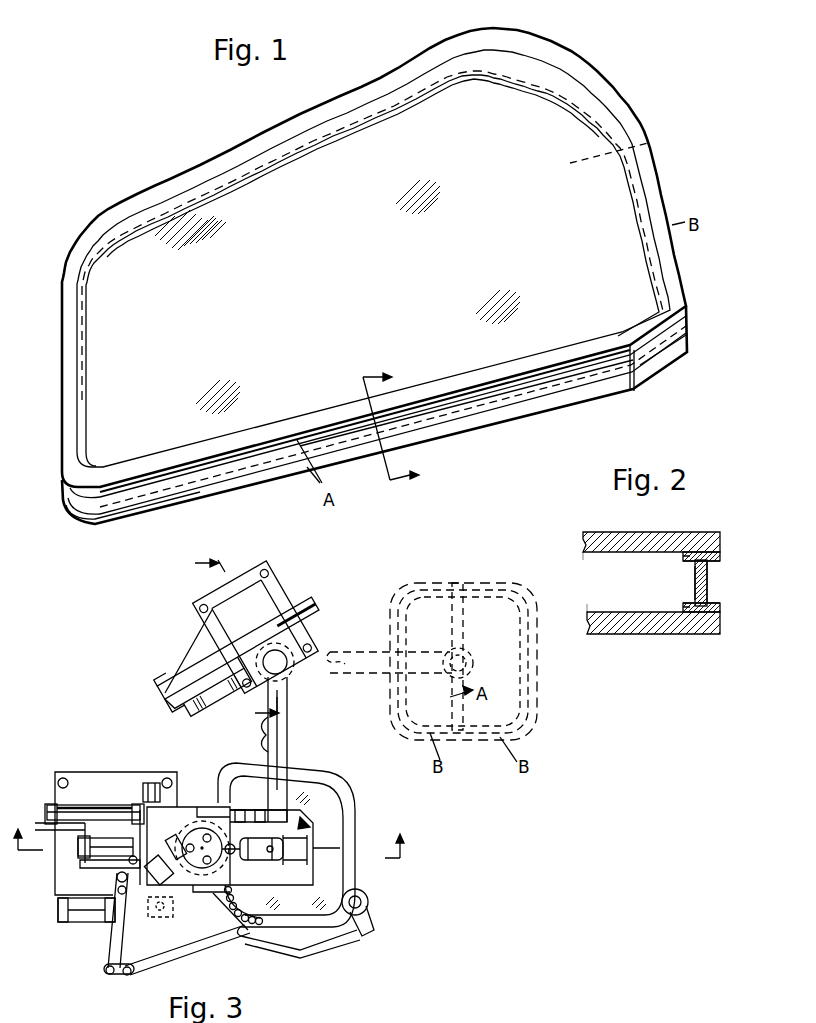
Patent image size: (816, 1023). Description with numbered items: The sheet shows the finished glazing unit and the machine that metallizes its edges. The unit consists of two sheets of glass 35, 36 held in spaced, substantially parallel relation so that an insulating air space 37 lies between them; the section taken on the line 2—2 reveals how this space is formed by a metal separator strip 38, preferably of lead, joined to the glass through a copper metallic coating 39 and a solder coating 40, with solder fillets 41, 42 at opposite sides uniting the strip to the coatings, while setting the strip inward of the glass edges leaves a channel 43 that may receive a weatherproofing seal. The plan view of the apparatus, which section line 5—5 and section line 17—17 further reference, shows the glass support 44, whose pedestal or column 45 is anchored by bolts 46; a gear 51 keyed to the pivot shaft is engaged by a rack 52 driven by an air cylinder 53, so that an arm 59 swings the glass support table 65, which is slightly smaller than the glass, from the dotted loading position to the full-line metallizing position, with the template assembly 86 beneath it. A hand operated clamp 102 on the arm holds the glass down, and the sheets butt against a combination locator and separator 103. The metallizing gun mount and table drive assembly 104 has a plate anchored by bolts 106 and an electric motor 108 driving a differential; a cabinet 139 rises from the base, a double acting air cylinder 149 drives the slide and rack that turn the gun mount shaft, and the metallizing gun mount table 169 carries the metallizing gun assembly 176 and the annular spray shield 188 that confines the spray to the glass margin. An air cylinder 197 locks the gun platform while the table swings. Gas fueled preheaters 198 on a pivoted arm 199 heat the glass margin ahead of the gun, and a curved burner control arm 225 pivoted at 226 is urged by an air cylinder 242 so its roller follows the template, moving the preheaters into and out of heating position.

In FIG. 1, the section line 2- 2 is at (397, 422).
In FIG. 3, the section line 5- 5 is at (211, 831).
In FIG. 3, the section line 17- 17 is at (227, 642).
In FIG. 1, the sheet of glass 35 is at (675, 284).
In FIG. 2, the sheet of glass 35 is at (650, 533).
In FIG. 3, the sheet of glass 35 is at (280, 907).
In FIG. 1, the sheet of glass 36 is at (690, 343).
In FIG. 2, the sheet of glass 36 is at (640, 634).
In FIG. 3, the sheet of glass 36 is at (327, 800).
In FIG. 1, the insulating air space 37 is at (623, 148).
In FIG. 2, the insulating air space 37 is at (600, 570).
In FIG. 1, the metal separator strip 38 is at (120, 500).
In FIG. 2, the metal separator strip 38 is at (708, 580).
In FIG. 2, the metallic coating 39 is at (717, 552).
In FIG. 2, the metallic coating 40 is at (688, 557).
In FIG. 2, the metal fillet 41 is at (712, 560).
In FIG. 2, the metal fillet 42 is at (695, 598).
In FIG. 1, the channel 43 is at (473, 407).
In FIG. 2, the channel 43 is at (713, 567).
In FIG. 3, the glass support 44 is at (280, 588).
In FIG. 3, the pedestal or column 45 is at (202, 618).
In FIG. 3, the bolts 46 is at (268, 568).
In FIG. 3, the gear 51 is at (292, 670).
In FIG. 3, the rack 52 is at (228, 673).
In FIG. 3, the air cylinder 53 is at (193, 697).
In FIG. 3, the arm 59 is at (348, 653).
In FIG. 3, the glass support table 65 is at (552, 730).
In FIG. 3, the template assembly 86 is at (540, 693).
In FIG. 3, the hand operated clamp 102 is at (363, 673).
In FIG. 3, the combination locator and separator 103 is at (457, 720).
In FIG. 3, the metallizing gun mount and table drive assembly 104 is at (71, 774).
In FIG. 3, the bolts 106 is at (63, 778).
In FIG. 3, the electric motor 108 is at (152, 783).
In FIG. 3, the cabinet 139 is at (107, 830).
In FIG. 3, the double acting air cylinder 149 is at (70, 810).
In FIG. 3, the metallizing gun mount table 169 is at (190, 803).
In FIG. 3, the metallizing gun assembly 176 is at (300, 825).
In FIG. 3, the annular spray shield 188 is at (180, 838).
In FIG. 3, the air cylinder 197 is at (85, 855).
In FIG. 3, the gas fueled preheaters 198 is at (233, 932).
In FIG. 3, the arm 199 is at (167, 948).
In FIG. 3, the burner control arm 225 is at (310, 937).
In FIG. 3, the pivot 226 is at (148, 912).
In FIG. 3, the air cylinder 242 is at (97, 913).